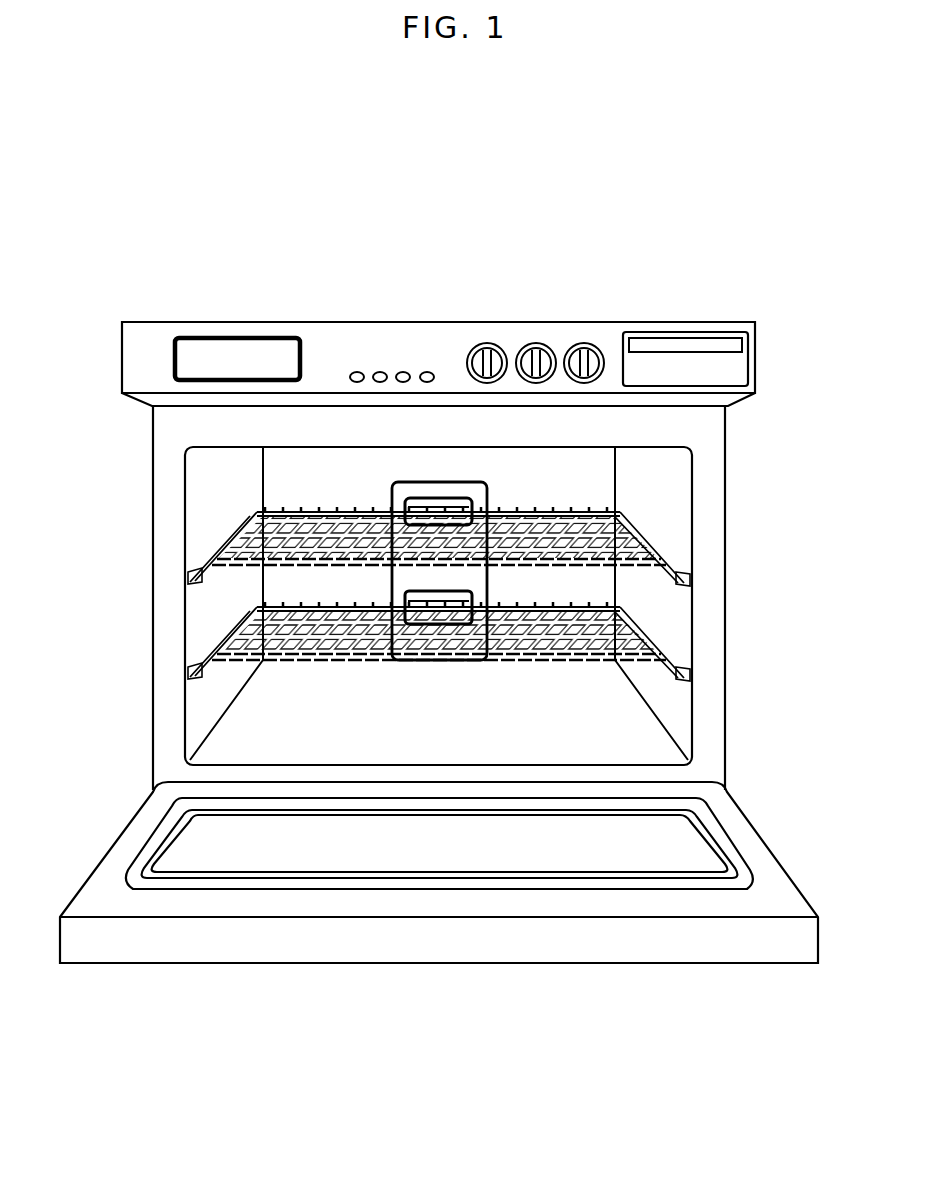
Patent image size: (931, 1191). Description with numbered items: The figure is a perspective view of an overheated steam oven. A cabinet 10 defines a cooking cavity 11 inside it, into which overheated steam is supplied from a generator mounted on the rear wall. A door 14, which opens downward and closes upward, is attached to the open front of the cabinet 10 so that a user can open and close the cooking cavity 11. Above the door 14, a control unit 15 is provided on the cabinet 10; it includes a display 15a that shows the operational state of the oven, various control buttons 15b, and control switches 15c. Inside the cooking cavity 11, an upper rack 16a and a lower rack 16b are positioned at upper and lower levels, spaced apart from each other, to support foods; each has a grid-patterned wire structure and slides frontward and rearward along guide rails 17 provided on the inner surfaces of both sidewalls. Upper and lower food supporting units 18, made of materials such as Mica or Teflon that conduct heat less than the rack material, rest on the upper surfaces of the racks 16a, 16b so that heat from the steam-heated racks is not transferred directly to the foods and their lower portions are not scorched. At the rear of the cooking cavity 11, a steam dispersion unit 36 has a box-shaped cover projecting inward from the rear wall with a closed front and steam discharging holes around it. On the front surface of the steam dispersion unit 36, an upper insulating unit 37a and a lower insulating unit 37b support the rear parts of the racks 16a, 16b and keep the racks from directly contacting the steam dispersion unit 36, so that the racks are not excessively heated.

The cabinet 10 is at (634, 283).
The cooking cavity 11 is at (438, 727).
The door 14 is at (455, 947).
The control unit 15 is at (350, 328).
The display 15a is at (228, 352).
The control buttons 15b is at (403, 371).
The control switches 15c is at (529, 343).
The upper rack 16a is at (379, 569).
The lower rack 16b is at (379, 657).
The guide rails 17 is at (203, 658).
The food supporting units 18 is at (640, 517).
The steam dispersion unit 36 is at (490, 491).
The upper insulating unit 37a is at (400, 503).
The lower insulating unit 37b is at (475, 600).